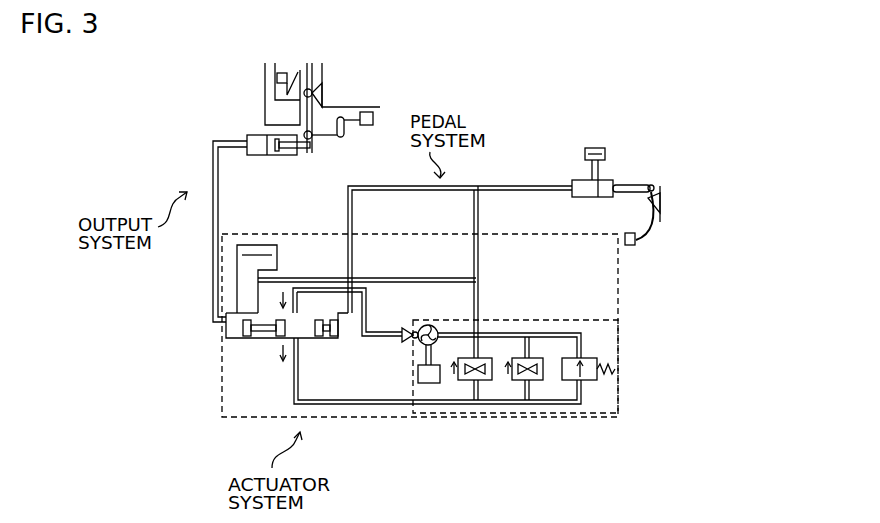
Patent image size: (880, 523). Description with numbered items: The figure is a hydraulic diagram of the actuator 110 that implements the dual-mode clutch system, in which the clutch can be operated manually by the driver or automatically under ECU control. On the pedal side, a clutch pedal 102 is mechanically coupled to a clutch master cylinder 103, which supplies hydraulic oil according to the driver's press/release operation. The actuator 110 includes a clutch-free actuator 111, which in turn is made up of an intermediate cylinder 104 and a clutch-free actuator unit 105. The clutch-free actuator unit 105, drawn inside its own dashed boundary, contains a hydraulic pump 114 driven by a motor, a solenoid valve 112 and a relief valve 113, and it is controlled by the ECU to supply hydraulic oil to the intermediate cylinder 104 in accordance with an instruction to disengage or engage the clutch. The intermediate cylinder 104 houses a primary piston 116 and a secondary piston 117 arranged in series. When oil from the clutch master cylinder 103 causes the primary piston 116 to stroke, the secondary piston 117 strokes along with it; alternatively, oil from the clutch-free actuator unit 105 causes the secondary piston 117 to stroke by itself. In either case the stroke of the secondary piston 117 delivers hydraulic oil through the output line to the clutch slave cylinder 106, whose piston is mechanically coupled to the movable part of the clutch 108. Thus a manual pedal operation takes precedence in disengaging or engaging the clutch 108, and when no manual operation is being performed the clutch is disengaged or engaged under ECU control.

The clutch pedal 102 is at (650, 187).
The clutch master cylinder 103 is at (578, 182).
The intermediate cylinder 104 is at (310, 308).
The clutch-free actuator unit 105 is at (557, 318).
The clutch slave cylinder 106 is at (250, 135).
The clutch 108 is at (316, 78).
The actuator 110 is at (665, 84).
The clutch-free actuator 111 is at (411, 232).
The solenoid valve 112 is at (513, 382).
The relief valve 113 is at (593, 352).
The hydraulic pump 114 is at (420, 352).
The primary piston 116 is at (318, 339).
The secondary piston 117 is at (262, 339).